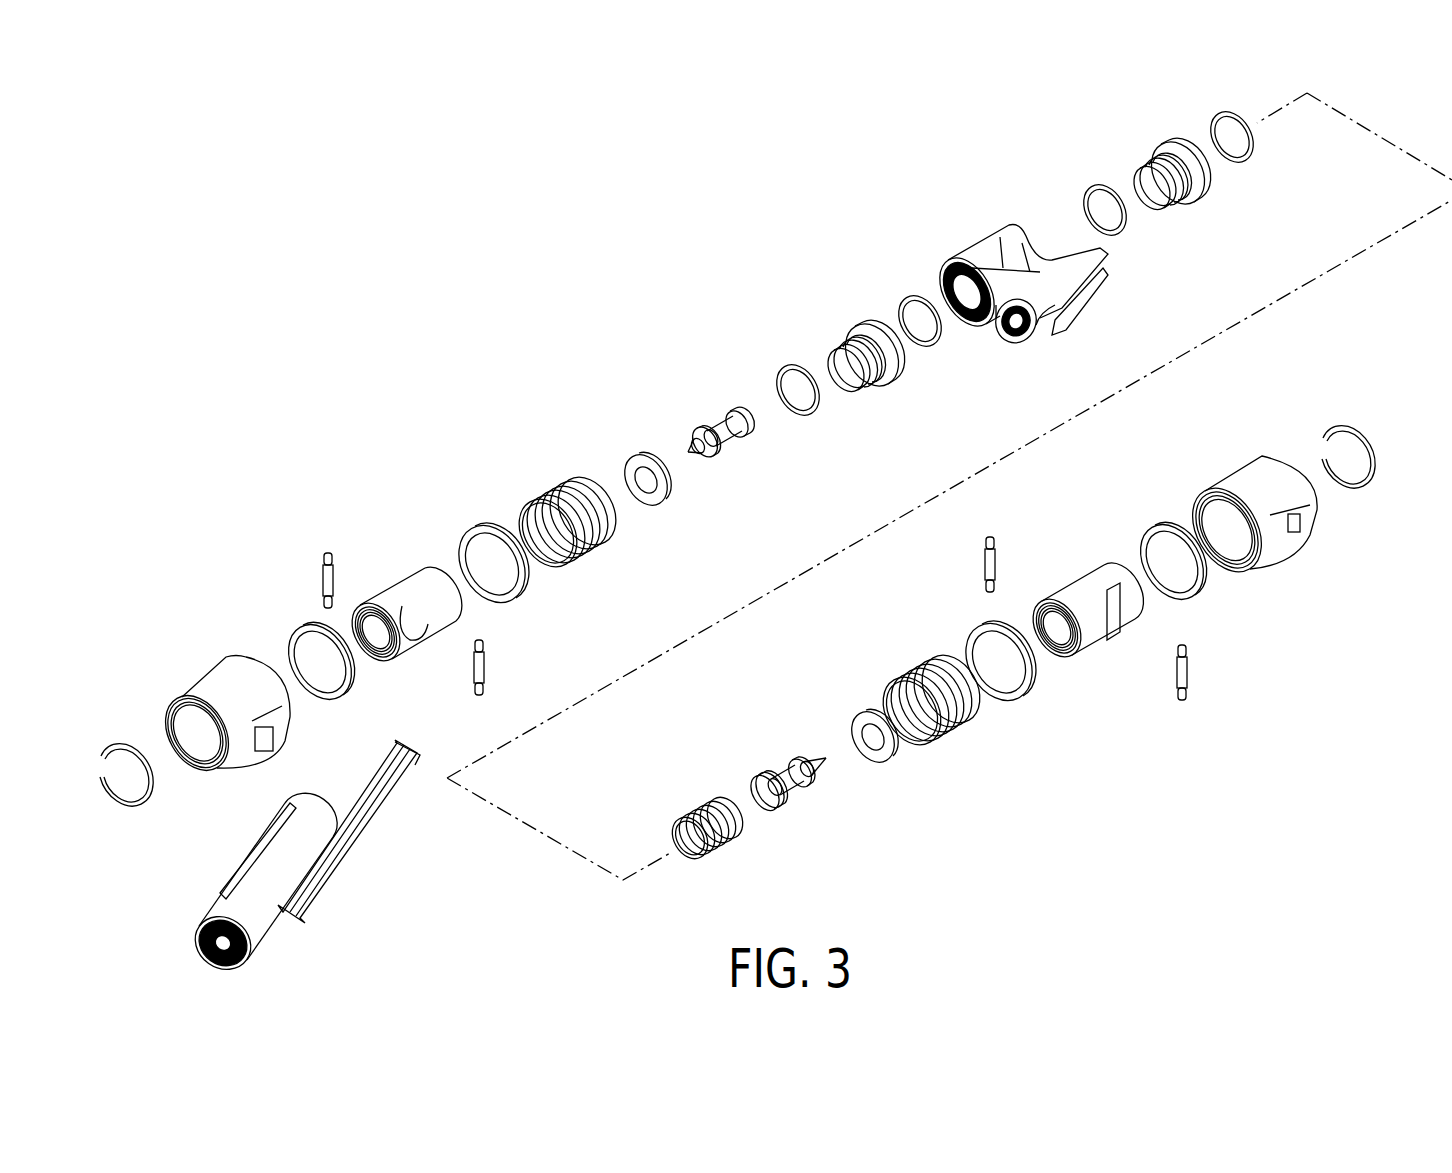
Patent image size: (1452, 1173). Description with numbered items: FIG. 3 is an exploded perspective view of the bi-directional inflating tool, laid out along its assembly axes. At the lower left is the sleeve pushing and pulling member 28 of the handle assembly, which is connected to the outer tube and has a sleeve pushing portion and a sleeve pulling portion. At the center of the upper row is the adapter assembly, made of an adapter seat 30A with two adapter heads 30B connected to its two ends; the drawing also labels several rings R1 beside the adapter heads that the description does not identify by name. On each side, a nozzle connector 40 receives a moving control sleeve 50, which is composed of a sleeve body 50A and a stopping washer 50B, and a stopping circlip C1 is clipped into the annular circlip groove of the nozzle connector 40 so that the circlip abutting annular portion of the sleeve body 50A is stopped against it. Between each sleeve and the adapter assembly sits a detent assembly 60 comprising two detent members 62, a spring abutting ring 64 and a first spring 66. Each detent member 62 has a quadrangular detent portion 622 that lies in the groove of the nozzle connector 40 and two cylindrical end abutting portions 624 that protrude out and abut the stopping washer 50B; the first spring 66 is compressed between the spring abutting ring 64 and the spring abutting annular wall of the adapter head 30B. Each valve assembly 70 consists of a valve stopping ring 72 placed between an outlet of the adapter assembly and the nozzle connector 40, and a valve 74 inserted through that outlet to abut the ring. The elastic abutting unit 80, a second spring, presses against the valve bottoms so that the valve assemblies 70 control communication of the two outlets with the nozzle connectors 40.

The sleeve pushing and pulling member 28 is at (292, 872).
The adapter seat 30A is at (990, 245).
The adapter heads 30B is at (847, 318).
The sealing ring R1 is at (780, 365).
The stopping circlip C1 is at (115, 745).
The nozzle connectors 40 is at (402, 587).
The moving control sleeves 50 is at (770, 565).
The sleeve body 50A is at (212, 691).
The stopping washer 50B is at (302, 635).
The detent assemblies 60 is at (739, 574).
The detent members 62 is at (814, 612).
The detent portion 622 is at (1188, 672).
The end abutting portions 624 is at (1188, 650).
The spring abutting ring 64 is at (480, 530).
The first spring 66 is at (560, 483).
The valve assemblies 70 is at (755, 576).
The valve stopping ring 72 is at (632, 460).
The valve 74 is at (722, 424).
The elastic abutting unit 80 is at (700, 808).